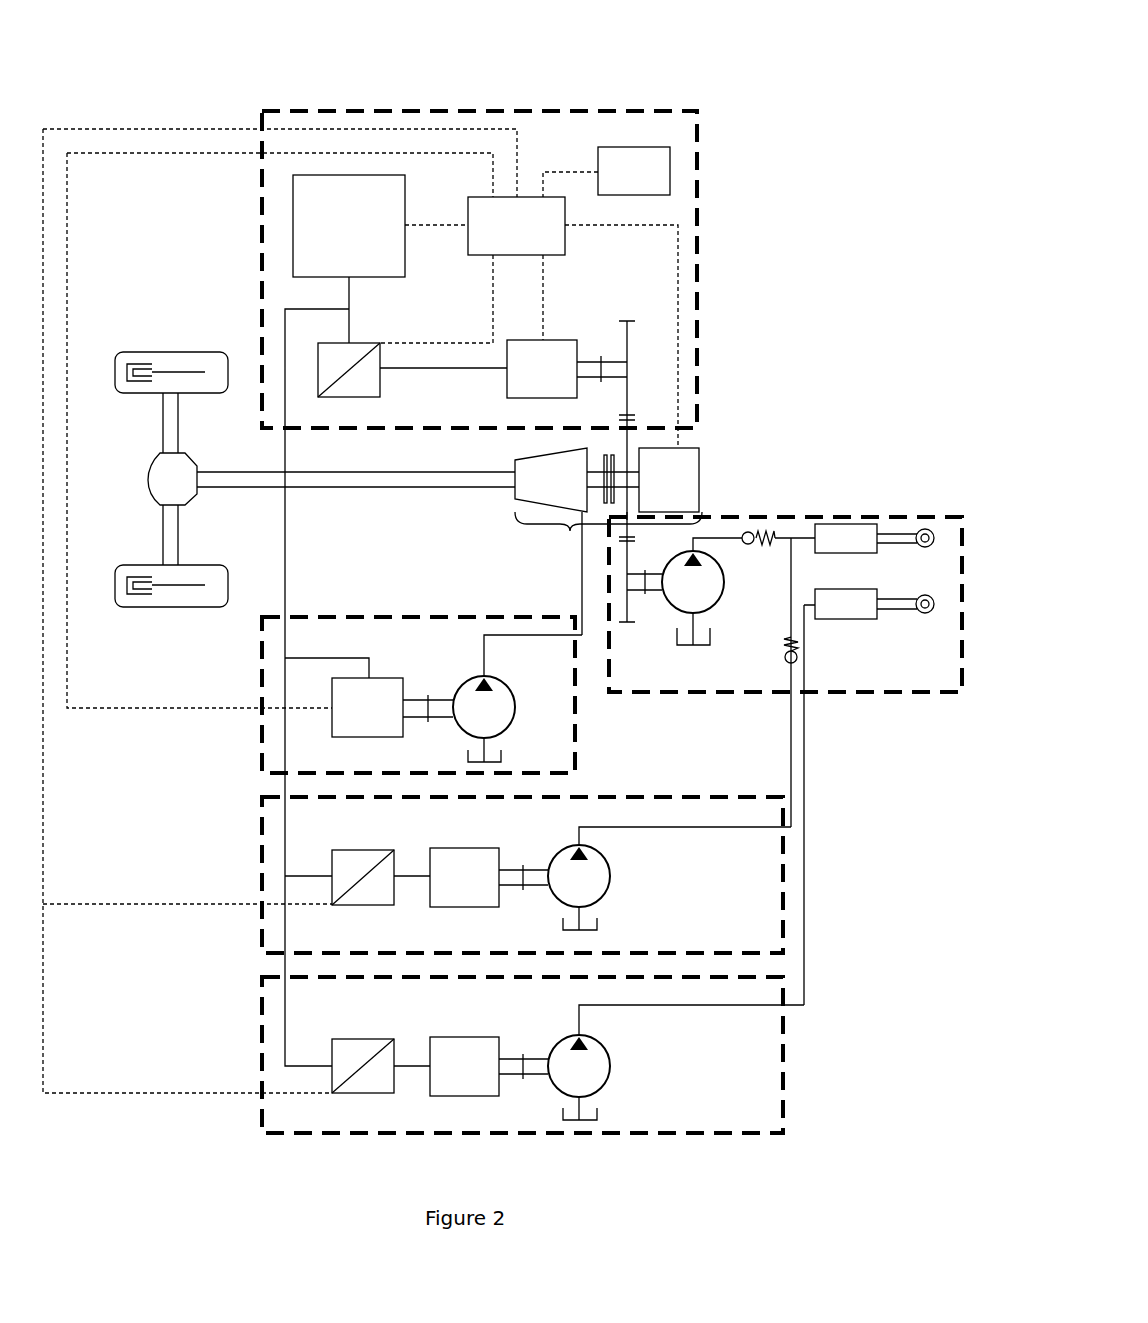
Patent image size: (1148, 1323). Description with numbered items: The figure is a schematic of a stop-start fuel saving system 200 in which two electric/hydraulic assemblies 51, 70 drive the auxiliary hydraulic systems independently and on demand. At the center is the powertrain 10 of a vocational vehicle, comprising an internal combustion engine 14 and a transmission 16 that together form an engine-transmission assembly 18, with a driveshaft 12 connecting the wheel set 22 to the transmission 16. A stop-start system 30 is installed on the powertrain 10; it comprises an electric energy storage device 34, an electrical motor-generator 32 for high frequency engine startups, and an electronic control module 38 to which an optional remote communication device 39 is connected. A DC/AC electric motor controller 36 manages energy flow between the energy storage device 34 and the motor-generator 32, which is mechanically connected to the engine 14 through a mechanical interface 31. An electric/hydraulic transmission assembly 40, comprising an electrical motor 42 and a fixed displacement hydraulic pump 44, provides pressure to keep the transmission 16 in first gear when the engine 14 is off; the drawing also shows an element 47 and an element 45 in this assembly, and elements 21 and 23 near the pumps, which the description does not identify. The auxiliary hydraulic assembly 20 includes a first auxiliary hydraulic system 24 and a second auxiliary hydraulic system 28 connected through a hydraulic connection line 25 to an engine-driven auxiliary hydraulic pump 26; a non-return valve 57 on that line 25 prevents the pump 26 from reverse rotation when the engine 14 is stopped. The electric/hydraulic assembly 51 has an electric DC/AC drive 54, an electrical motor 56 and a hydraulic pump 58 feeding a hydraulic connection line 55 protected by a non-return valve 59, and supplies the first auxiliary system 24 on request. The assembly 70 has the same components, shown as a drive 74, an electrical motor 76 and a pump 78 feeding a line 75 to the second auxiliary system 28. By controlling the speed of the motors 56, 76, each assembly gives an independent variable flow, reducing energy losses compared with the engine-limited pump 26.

The system 200 is at (716, 66).
The stop-start system 30 is at (702, 184).
The electric energy storage device 34 is at (349, 226).
The electronic control module 38 is at (516, 226).
The remote communication device 39 is at (634, 171).
The electrical motor-generator 32 is at (542, 369).
The DC/AC electric motor controller 36 is at (360, 343).
The mechanical interface 31 is at (627, 321).
The driveshaft 12 is at (407, 472).
The powertrain 10 is at (446, 496).
The transmission 16 is at (502, 514).
The internal combustion engine 14 is at (687, 448).
The engine-transmission assembly 18 is at (608, 535).
The wheel set 22 is at (130, 395).
The auxiliary hydraulic assembly 20 is at (826, 512).
The auxiliary hydraulic pump 26 is at (723, 592).
The hydraulic connection line 25 is at (712, 540).
The non-return valve 57 is at (748, 545).
The pump drive shaft 21 is at (630, 624).
The reservoir 23 is at (712, 640).
The non-return valve 59 is at (785, 660).
The first auxiliary hydraulic system 24 is at (847, 553).
The second auxiliary hydraulic system 28 is at (847, 619).
The electric/hydraulic transmission assembly 40 is at (254, 694).
The electrical motor 42 is at (367, 707).
The fixed displacement hydraulic pump 44 is at (462, 685).
The hydraulic line 47 is at (523, 636).
The reservoir 45 is at (503, 757).
The electric/hydraulic assembly 51 is at (254, 868).
The electric DC/AC drive 54 is at (382, 850).
The electrical motor 56 is at (464, 877).
The hydraulic pump 58 is at (558, 855).
The hydraulic connection line 55 is at (618, 828).
The electric/hydraulic assembly 70 is at (254, 1058).
The inverter 74 is at (382, 1039).
The electrical motor 76 is at (464, 1066).
The hydraulic pump 78 is at (558, 1044).
The hydraulic line 75 is at (618, 1018).